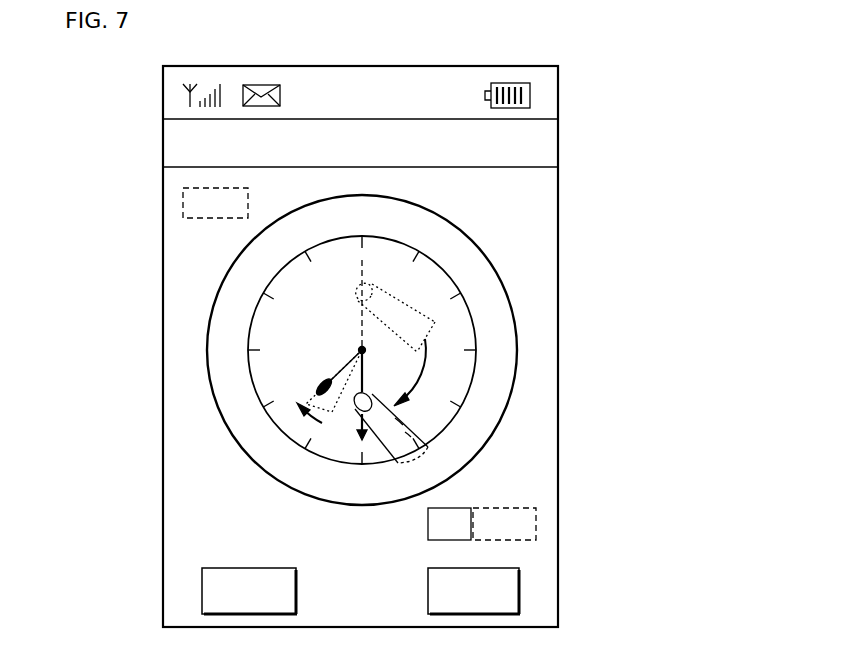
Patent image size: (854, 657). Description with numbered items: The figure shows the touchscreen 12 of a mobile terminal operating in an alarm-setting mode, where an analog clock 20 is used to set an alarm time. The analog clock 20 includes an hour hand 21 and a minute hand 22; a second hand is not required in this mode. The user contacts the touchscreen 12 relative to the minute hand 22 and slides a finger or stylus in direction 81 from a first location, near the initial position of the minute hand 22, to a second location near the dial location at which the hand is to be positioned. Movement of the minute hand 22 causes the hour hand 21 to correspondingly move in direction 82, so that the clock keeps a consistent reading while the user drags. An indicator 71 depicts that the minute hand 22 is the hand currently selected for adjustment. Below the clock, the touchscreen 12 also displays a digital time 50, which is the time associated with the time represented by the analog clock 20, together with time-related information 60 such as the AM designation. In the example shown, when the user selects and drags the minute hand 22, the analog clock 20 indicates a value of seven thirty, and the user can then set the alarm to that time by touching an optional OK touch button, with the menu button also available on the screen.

The touchscreen 12 is at (559, 216).
The indicator 71 is at (183, 203).
The analog clock 20 is at (498, 430).
The hour hand 21 is at (330, 376).
The minute hand 22 is at (357, 318).
The direction 81 is at (432, 374).
The direction 82 is at (318, 427).
The time-related information 60 is at (428, 523).
The digital time 50 is at (537, 523).